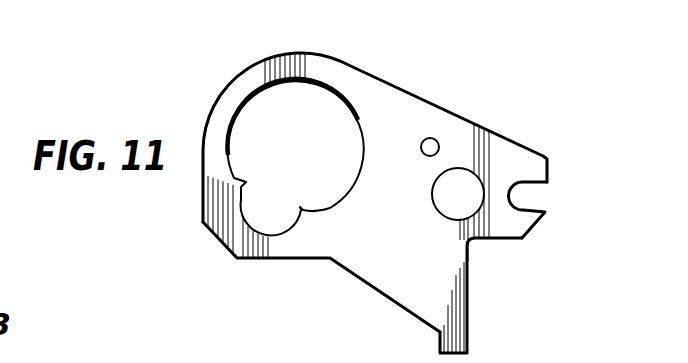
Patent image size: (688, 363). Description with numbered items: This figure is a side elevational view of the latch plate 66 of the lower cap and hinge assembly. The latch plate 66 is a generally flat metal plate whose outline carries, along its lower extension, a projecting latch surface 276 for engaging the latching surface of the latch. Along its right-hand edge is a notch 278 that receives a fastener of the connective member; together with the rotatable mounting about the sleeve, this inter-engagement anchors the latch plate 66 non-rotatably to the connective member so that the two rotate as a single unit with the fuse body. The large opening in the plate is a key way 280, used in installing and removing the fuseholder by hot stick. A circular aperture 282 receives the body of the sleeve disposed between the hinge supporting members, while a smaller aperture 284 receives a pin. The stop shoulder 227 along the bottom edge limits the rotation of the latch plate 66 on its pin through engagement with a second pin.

The latch plate 66 is at (400, 104).
The stop shoulder 227 is at (300, 260).
The projecting latch surface 276 is at (469, 318).
The notch 278 is at (524, 209).
The key way 280 is at (330, 103).
The aperture 282 is at (432, 201).
The aperture 284 is at (439, 139).